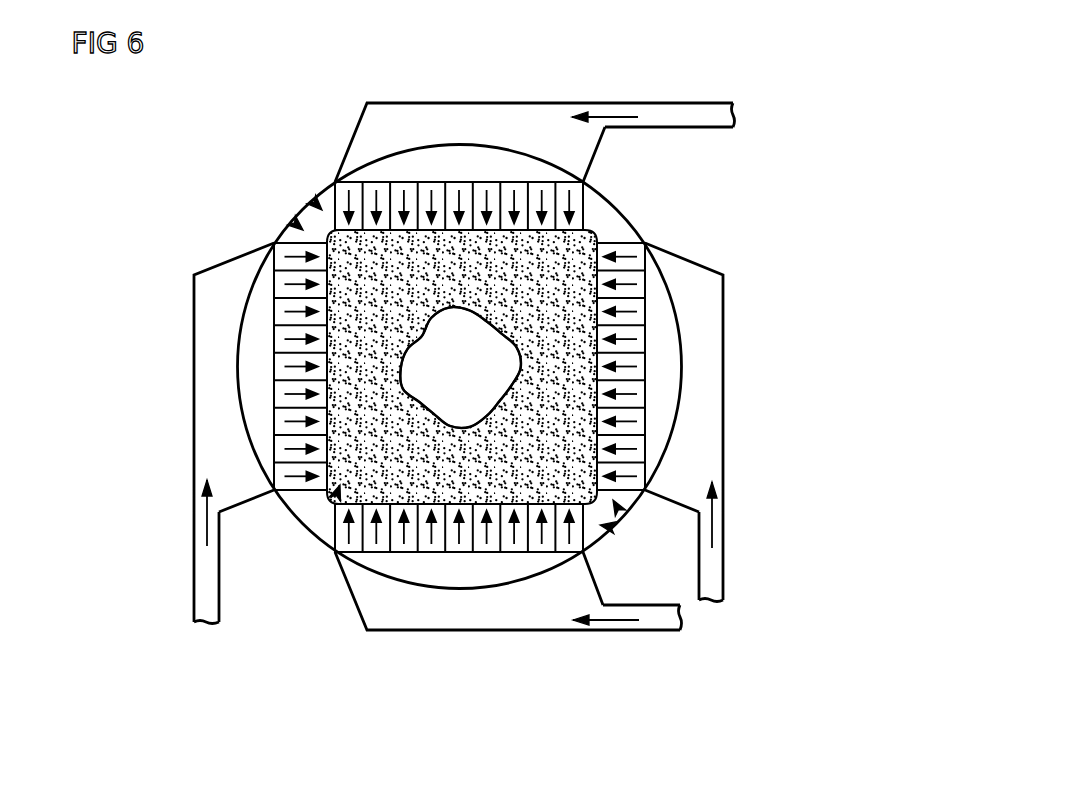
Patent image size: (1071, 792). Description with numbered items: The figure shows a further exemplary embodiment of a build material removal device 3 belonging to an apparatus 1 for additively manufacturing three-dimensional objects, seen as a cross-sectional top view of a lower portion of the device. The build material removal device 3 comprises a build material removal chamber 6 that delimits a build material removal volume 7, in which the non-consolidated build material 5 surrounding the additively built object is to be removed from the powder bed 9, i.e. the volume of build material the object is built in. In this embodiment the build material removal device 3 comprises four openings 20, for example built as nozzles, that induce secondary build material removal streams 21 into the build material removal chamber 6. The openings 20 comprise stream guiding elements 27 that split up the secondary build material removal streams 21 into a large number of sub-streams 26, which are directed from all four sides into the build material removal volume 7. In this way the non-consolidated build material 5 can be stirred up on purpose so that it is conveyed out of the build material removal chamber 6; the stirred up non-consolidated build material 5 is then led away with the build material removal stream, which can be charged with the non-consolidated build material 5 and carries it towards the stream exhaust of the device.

The apparatus 1 is at (730, 622).
The build material removal device 3 is at (692, 88).
The non-consolidated build material 5 is at (442, 322).
The build material removal chamber 6 is at (329, 198).
The build material removal volume 7 is at (562, 452).
The powder bed 9 is at (335, 500).
The openings 20 is at (357, 122).
The secondary build material removal streams 21 is at (613, 117).
The sub-streams 26 is at (570, 202).
The stream guiding elements 27 is at (318, 206).